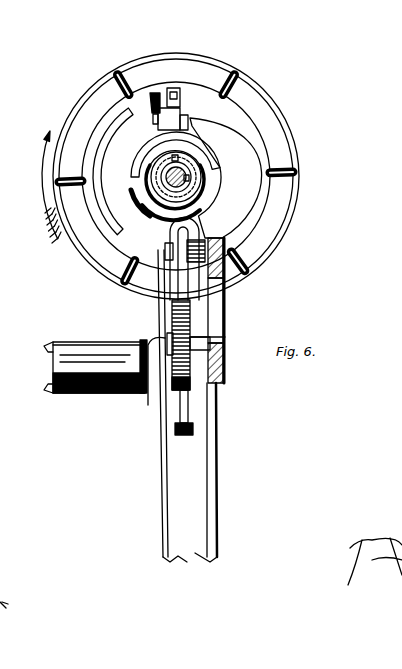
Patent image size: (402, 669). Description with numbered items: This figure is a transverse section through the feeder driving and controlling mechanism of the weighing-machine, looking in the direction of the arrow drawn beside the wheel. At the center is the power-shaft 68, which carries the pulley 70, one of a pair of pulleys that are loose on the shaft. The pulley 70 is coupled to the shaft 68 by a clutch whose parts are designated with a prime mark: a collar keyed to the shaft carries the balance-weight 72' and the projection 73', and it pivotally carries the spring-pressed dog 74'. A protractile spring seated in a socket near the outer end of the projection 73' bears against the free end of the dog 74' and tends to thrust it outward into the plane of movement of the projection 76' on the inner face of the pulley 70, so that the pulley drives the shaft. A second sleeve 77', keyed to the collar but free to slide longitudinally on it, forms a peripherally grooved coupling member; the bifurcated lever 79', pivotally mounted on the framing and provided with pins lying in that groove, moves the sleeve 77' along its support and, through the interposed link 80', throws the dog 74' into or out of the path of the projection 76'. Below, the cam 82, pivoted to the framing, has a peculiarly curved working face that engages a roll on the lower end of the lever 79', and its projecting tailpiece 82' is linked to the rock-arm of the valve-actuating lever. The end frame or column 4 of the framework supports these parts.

The end frame or column 4 is at (203, 469).
The power-shaft 68 is at (189, 168).
The pulley 70 is at (279, 114).
The balance-weight 72' is at (226, 178).
The projection 73' is at (193, 73).
The spring-pressed dog 74' is at (205, 96).
The projection on the pulley 76' is at (123, 105).
The slidable coupling member (second sleeve) 77' is at (149, 187).
The bifurcated lever 79' is at (102, 235).
The link 80' is at (128, 171).
The cam 82 is at (208, 304).
The tailpiece 82' is at (154, 412).